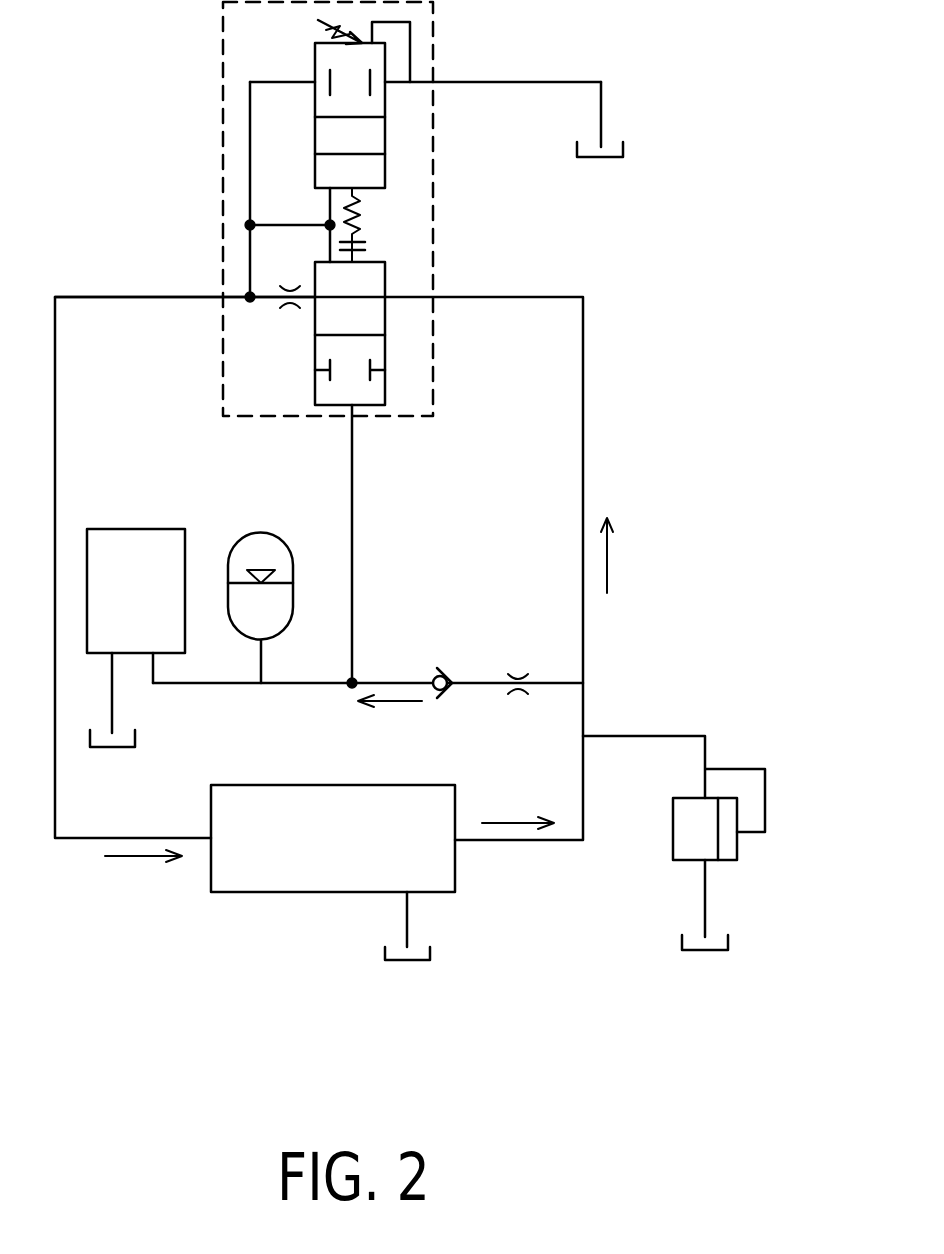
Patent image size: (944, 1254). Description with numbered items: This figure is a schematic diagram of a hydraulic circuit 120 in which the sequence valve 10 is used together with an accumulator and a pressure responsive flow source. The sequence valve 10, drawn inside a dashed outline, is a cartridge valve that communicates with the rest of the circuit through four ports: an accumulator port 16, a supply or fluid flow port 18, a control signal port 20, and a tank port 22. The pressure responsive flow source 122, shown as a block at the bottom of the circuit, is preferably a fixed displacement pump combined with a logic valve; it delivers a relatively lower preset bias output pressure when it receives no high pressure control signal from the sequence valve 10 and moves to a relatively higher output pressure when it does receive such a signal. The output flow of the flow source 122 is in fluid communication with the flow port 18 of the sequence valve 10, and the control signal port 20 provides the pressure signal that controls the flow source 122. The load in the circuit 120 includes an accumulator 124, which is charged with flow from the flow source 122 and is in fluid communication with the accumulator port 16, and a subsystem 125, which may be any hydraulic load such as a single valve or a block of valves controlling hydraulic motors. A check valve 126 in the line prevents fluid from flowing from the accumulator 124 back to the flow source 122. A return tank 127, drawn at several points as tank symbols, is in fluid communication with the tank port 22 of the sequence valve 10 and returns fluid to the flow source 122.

The sequence valve 10 is at (222, 165).
The accumulator port 16 is at (350, 417).
The supply or fluid flow port 18 is at (455, 280).
The control signal port 20 is at (220, 297).
The tank port 22 is at (433, 82).
The hydraulic circuit 120 is at (648, 452).
The pressure responsive flow source 122 is at (283, 877).
The accumulator 124 is at (295, 608).
The subsystem 125 is at (165, 605).
The check valve 126 is at (441, 675).
The return tank 127 is at (623, 150).